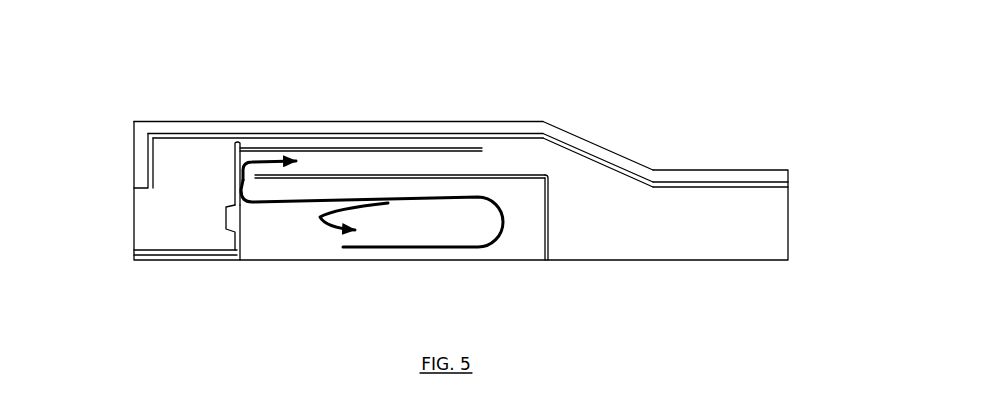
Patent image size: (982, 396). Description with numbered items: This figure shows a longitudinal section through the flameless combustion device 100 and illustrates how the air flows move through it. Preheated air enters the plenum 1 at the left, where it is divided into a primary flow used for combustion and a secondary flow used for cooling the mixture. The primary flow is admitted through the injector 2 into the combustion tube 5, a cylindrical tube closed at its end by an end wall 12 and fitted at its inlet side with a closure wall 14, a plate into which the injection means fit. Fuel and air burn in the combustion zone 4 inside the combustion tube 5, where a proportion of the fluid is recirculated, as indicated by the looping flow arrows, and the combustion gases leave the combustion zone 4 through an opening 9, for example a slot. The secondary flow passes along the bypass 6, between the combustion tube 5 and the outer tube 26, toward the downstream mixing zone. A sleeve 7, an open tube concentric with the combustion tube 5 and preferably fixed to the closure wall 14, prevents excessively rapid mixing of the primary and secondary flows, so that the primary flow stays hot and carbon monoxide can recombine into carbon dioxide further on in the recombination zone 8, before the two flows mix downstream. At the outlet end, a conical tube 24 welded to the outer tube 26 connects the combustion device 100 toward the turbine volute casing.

The flameless combustion device 100 is at (567, 92).
The plenum 1 is at (157, 204).
The injector 2 is at (236, 244).
The combustion zone 4 is at (474, 254).
The combustion tube 5 is at (509, 182).
The bypass 6 is at (296, 138).
The sleeve 7 is at (338, 142).
The recombination zone 8 is at (433, 160).
The opening 9 is at (248, 164).
The end wall 12 is at (554, 216).
The closure wall 14 is at (232, 169).
The conical tube 24 is at (613, 150).
The outer tube 26 is at (482, 117).